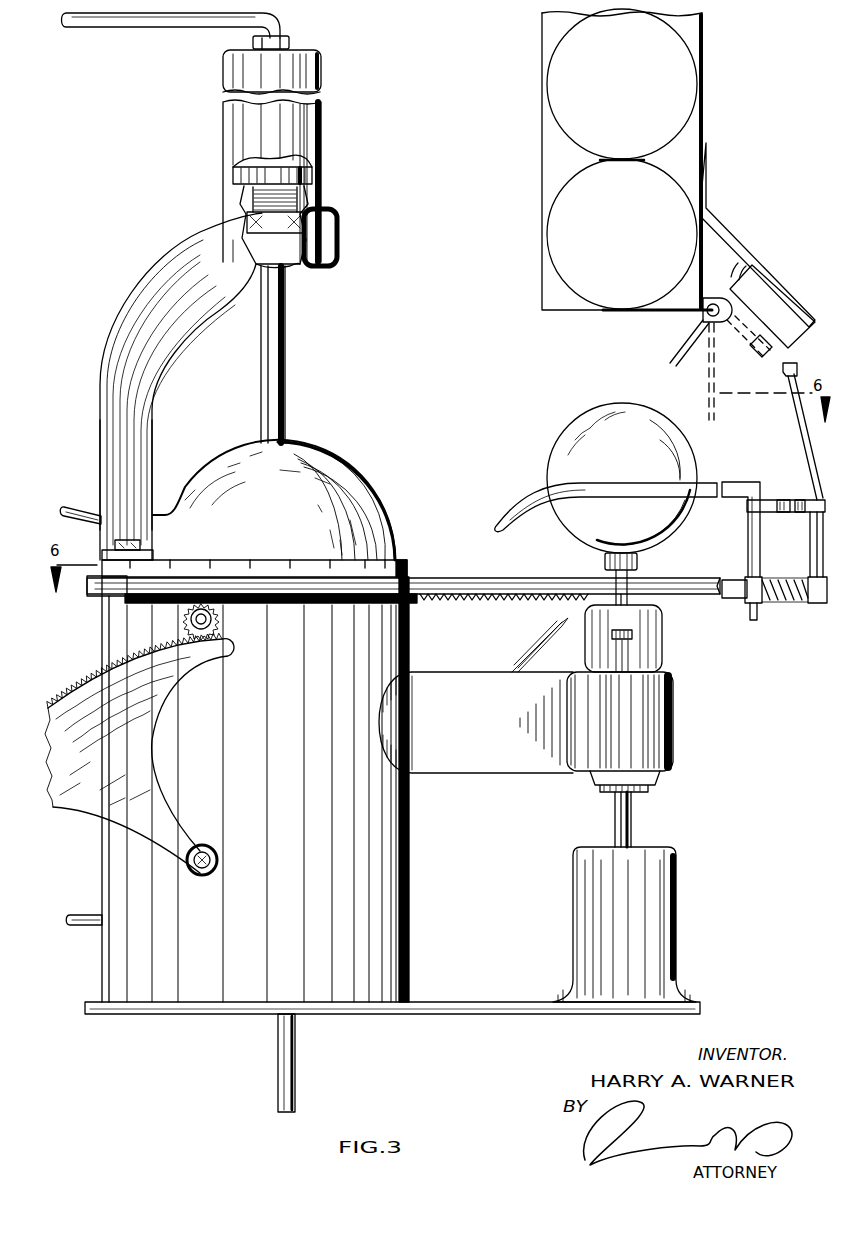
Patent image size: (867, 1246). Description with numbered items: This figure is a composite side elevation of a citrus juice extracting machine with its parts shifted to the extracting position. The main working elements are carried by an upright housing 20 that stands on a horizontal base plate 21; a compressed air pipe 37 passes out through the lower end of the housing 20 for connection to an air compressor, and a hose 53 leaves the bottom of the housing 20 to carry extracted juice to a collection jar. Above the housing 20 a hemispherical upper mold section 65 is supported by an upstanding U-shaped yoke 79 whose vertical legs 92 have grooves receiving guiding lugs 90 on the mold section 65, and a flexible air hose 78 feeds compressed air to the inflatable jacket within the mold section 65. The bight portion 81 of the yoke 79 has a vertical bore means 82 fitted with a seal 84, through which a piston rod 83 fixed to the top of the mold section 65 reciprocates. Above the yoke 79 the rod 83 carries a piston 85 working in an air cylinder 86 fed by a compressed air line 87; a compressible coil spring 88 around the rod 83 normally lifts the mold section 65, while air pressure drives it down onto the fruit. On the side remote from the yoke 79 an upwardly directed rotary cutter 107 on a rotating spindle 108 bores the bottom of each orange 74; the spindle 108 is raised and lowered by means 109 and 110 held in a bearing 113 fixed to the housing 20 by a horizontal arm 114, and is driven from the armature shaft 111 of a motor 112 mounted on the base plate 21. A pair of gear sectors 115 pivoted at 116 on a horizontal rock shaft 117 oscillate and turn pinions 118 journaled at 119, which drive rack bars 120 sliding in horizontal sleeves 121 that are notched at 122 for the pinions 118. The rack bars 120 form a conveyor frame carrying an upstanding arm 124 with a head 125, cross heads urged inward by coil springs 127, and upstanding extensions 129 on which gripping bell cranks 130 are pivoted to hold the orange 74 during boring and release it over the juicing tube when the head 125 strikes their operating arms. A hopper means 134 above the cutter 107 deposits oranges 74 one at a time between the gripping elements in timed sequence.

The upright housing 20 is at (402, 824).
The horizontal base plate 21 is at (486, 1012).
The compressed air pipe 37 is at (80, 928).
The juice hose 53 is at (278, 1076).
The upper mold section 65 is at (372, 516).
The orange 74 is at (600, 446).
The flexible air hose 78 is at (72, 509).
The U-shaped yoke 79 is at (124, 301).
The bight portion 81 is at (338, 241).
The vertical bore means 82 is at (291, 266).
The piston rod 83 is at (287, 365).
The seal 84 is at (302, 222).
The piston 85 is at (313, 172).
The air cylinder 86 is at (318, 130).
The compressed air line 87 is at (153, 30).
The compressible coil spring 88 is at (251, 200).
The lugs 90 is at (158, 537).
The vertical legs of yoke 92 is at (157, 421).
The rotary cutter 107 is at (640, 561).
The rotating spindle 108 is at (614, 575).
The spindle elevating means 109 is at (630, 636).
The spindle elevating means 110 is at (630, 660).
The armature shaft 111 is at (633, 816).
The motor 112 is at (666, 937).
The bearing 113 is at (674, 730).
The horizontal arm 114 is at (512, 772).
The gear sectors 115 is at (137, 722).
The pivot 116 is at (207, 851).
The horizontal rock shaft 117 is at (218, 856).
The pinions 118 is at (216, 620).
The pinion journals 119 is at (187, 620).
The rack bars 120 is at (470, 600).
The horizontal sleeves 121 is at (343, 602).
The notches 122 is at (208, 598).
The upstanding arm 124 is at (812, 553).
The head 125 is at (802, 498).
The compressible coil springs 127 is at (779, 608).
The upstanding extensions 129 is at (748, 538).
The gripping bell cranks 130 is at (527, 494).
The hopper means 134 is at (703, 108).